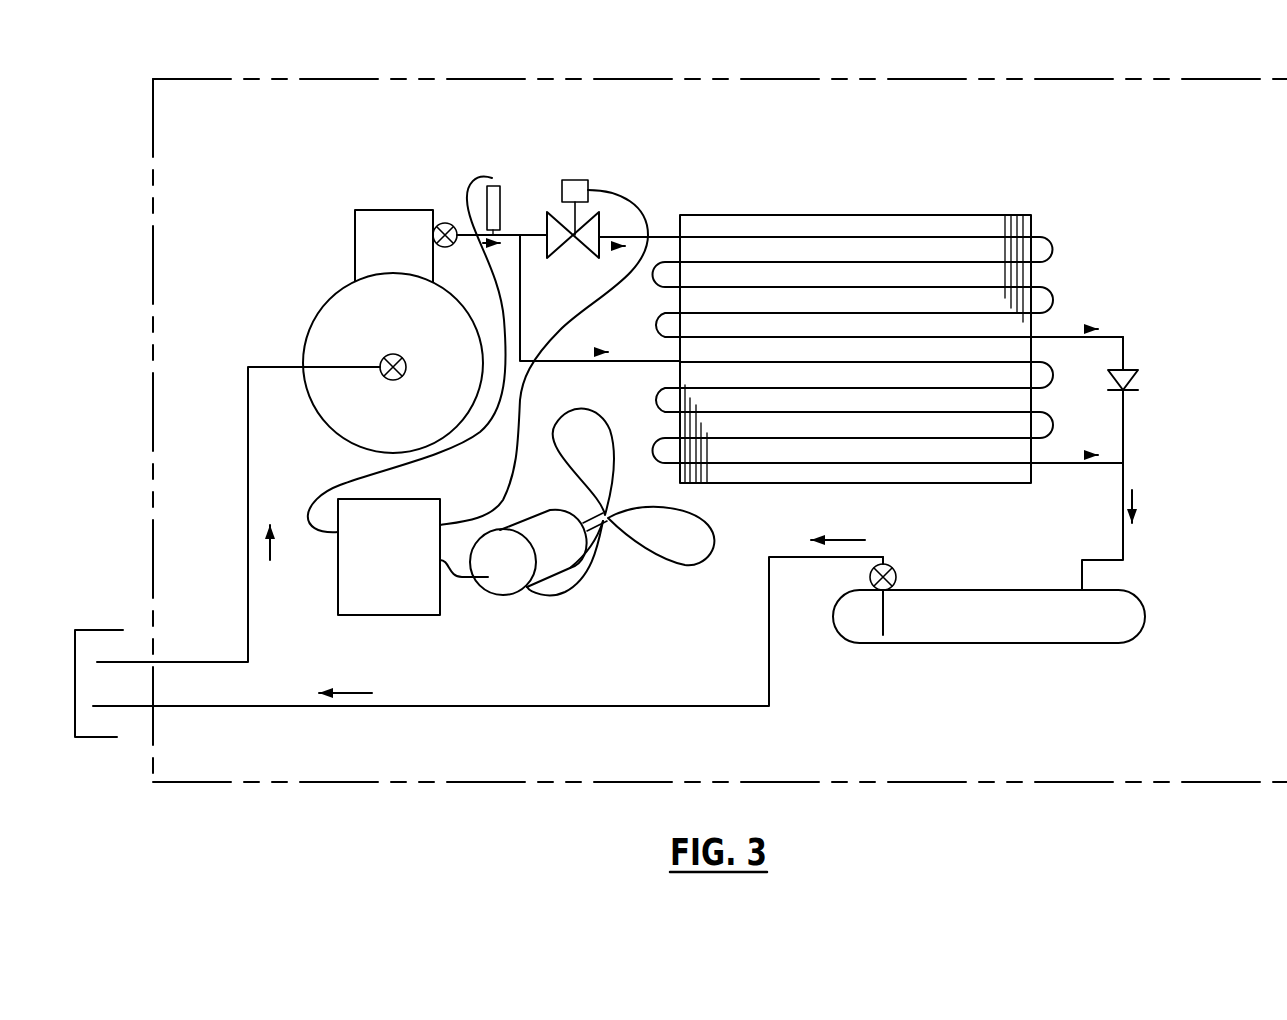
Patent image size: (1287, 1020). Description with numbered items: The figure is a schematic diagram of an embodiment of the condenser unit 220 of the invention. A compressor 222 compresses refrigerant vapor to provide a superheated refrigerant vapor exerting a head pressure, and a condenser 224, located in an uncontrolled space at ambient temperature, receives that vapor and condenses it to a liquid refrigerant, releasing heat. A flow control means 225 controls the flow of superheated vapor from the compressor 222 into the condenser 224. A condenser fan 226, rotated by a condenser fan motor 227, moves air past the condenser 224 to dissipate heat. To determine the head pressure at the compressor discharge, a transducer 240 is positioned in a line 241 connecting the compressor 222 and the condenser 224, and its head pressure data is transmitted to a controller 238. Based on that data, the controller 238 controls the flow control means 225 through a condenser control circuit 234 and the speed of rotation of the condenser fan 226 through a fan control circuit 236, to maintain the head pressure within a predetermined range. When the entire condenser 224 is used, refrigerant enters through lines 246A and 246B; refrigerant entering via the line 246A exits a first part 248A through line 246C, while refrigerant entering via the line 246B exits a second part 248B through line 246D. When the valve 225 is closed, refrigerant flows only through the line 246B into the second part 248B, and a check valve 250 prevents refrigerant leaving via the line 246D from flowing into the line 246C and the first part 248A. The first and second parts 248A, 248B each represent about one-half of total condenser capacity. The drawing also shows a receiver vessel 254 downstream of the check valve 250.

The condenser unit 220 is at (1083, 68).
The compressor 222 is at (318, 310).
The condenser 224 is at (897, 357).
The flow control means 225 is at (567, 247).
The condenser fan 226 is at (572, 583).
The condenser fan motor 227 is at (505, 583).
The condenser control circuit 234 is at (622, 187).
The fan control circuit 236 is at (467, 582).
The controller 238 is at (368, 602).
The transducer 240 is at (500, 192).
The line 241 is at (465, 245).
The line 246A is at (662, 233).
The line 246B is at (652, 365).
The line 246C is at (1070, 337).
The line 246D is at (1063, 465).
The first part 248A is at (878, 240).
The second part 248B is at (878, 468).
The check valve 250 is at (1140, 380).
The receiver tank 254 is at (1052, 635).